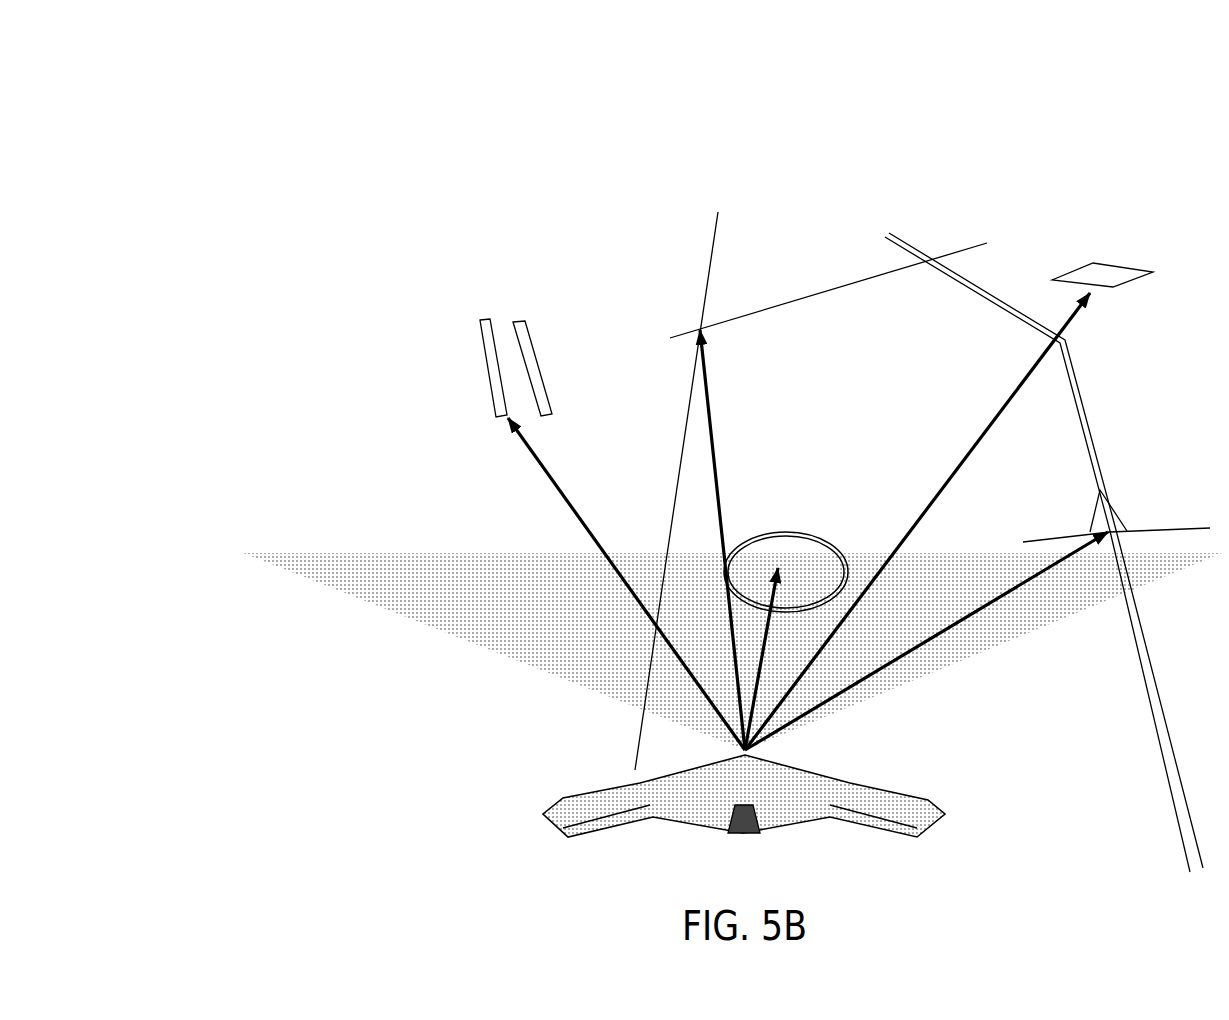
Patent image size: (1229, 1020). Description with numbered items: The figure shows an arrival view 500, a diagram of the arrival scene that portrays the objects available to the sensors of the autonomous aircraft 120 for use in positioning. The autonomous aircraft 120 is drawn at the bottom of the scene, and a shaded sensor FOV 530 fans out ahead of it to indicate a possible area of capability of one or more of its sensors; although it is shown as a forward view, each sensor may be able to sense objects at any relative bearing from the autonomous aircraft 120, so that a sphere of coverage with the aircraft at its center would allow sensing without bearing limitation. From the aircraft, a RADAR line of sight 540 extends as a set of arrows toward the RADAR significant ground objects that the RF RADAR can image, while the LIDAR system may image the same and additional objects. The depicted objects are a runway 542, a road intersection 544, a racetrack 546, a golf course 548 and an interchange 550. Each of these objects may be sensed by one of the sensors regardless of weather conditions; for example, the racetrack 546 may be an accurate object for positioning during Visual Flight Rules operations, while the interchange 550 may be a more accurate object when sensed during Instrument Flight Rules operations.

The arrival view 500 is at (104, 102).
The autonomous aircraft 120 is at (937, 822).
The sensor FOV 530 is at (513, 632).
The RADAR line of sight 540 is at (982, 422).
The runway 542 is at (498, 425).
The road intersection 544 is at (688, 328).
The racetrack 546 is at (783, 560).
The golf course 548 is at (1123, 288).
The interchange 550 is at (1123, 532).